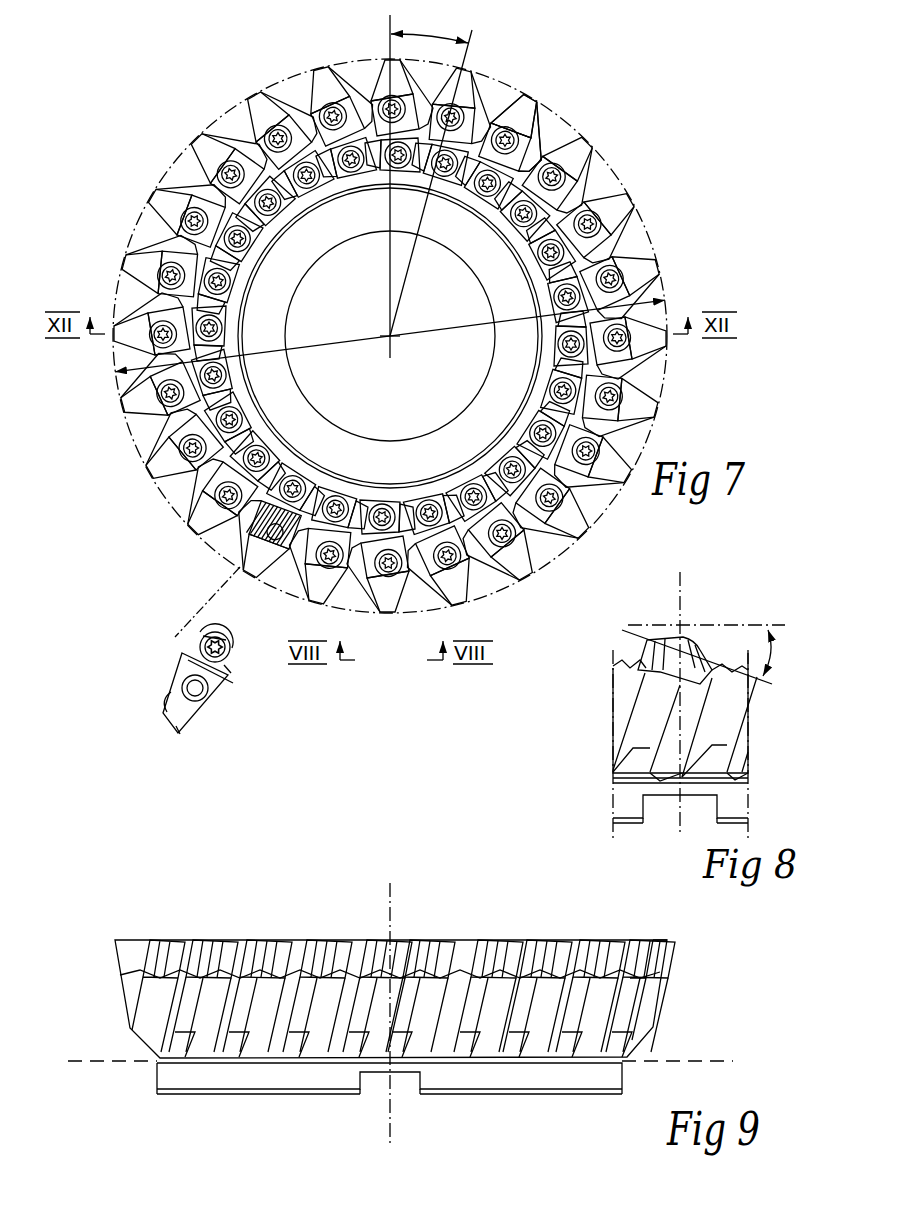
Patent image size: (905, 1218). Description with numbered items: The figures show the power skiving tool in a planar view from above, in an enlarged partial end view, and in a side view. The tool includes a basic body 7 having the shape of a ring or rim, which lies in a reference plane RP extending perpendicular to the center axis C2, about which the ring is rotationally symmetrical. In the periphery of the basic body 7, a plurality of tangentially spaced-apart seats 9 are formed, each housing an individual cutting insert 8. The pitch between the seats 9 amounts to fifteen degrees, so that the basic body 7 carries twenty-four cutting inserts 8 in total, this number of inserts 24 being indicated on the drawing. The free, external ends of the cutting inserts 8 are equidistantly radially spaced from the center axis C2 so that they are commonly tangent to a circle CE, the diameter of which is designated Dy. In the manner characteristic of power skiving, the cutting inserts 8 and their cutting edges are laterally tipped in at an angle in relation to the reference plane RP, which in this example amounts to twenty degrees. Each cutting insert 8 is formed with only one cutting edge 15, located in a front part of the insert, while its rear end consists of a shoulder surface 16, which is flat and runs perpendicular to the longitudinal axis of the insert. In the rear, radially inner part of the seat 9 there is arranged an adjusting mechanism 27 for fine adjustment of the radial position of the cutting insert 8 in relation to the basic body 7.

In FIG. 7, the basic body 7 is at (494, 112).
In FIG. 8, the basic body 7 is at (685, 738).
In FIG. 9, the basic body 7 is at (157, 1073).
In FIG. 7, the cutting insert 8 is at (594, 143).
In FIG. 8, the cutting insert 8 is at (658, 636).
In FIG. 9, the cutting insert 8 is at (270, 938).
In FIG. 7, the peripheral tooth portion of cutter body 24 is at (553, 140).
In FIG. 9, the peripheral tooth portion of cutter body 24 is at (137, 1003).
In FIG. 7, the seat 9 is at (246, 520).
In FIG. 7, the cutting edge 15 is at (178, 731).
In FIG. 7, the shoulder surface 16 is at (227, 667).
In FIG. 7, the adjusting mechanism 27 is at (200, 636).
In FIG. 7, the circle CE is at (170, 172).
In FIG. 7, the center axis C2 is at (397, 338).
In FIG. 8, the center axis C2 is at (682, 597).
In FIG. 9, the center axis C2 is at (393, 887).
In FIG. 7, the diameter Dy is at (343, 343).
In FIG. 9, the reference plane RP is at (400, 1047).